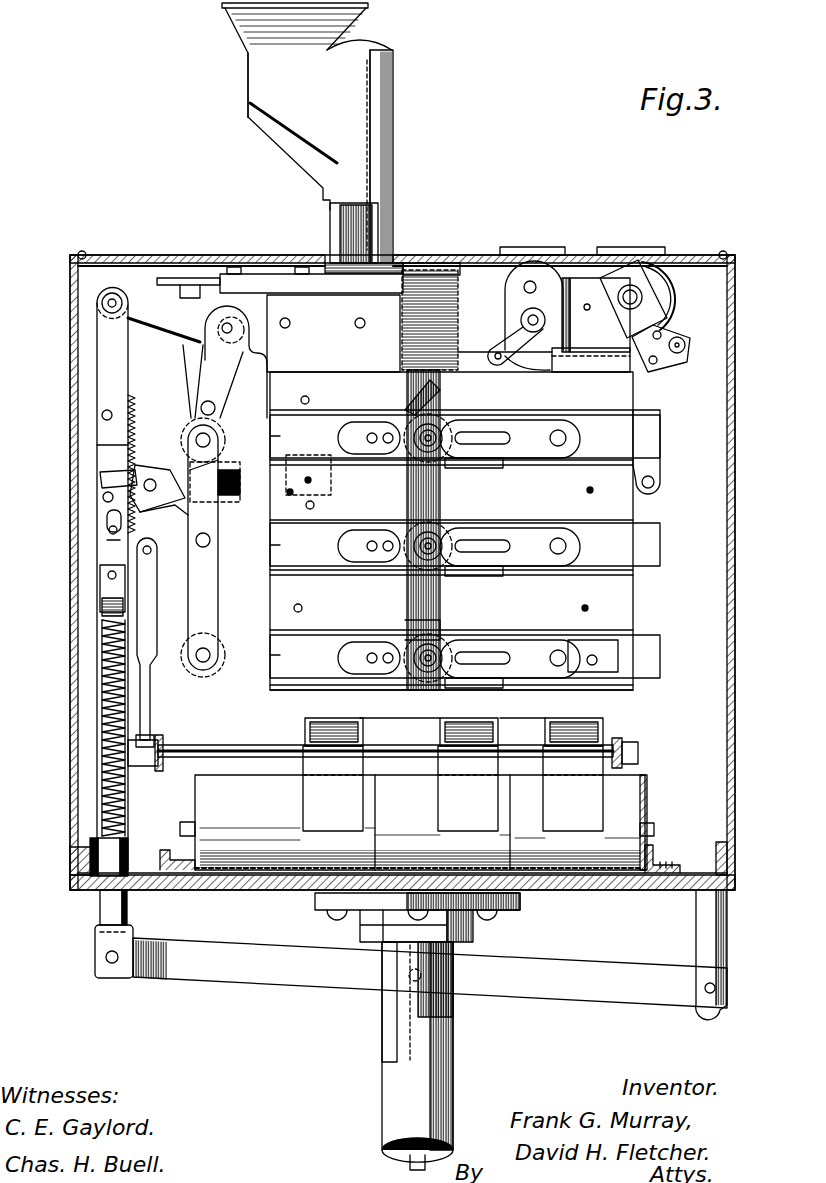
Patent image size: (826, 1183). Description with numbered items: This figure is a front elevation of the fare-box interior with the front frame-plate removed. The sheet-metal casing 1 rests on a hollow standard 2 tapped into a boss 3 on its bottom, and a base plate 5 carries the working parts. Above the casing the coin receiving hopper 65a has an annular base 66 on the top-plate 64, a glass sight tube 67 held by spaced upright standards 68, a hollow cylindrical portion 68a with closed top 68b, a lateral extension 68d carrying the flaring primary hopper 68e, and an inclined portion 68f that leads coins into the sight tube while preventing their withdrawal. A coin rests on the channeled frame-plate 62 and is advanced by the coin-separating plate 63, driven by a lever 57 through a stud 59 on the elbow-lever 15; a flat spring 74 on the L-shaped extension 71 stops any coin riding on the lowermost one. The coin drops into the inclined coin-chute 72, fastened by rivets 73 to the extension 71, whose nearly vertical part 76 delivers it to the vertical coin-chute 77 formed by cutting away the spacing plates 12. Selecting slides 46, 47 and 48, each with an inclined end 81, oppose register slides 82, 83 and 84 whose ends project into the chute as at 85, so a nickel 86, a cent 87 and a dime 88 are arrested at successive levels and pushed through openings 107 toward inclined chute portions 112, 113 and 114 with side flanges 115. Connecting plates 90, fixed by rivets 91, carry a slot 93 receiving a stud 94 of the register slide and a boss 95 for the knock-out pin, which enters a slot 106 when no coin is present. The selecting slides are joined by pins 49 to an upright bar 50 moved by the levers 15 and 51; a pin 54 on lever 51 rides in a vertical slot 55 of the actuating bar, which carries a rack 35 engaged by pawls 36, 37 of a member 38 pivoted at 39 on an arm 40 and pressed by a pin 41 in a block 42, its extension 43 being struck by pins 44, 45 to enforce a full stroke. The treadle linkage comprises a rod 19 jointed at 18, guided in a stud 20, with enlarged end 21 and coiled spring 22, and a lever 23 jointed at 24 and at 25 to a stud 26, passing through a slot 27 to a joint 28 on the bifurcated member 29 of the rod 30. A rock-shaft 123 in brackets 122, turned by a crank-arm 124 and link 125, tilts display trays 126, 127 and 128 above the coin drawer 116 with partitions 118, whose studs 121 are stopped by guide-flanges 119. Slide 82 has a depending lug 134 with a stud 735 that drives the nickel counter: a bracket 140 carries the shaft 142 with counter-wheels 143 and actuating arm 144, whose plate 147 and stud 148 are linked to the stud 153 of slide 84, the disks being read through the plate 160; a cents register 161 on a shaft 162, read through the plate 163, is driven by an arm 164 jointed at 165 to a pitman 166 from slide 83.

The casing 1 is at (118, 262).
The standard 2 is at (382, 1075).
The boss 3 is at (522, 900).
The base plate 5 is at (213, 890).
The spacing plates 12 is at (451, 538).
The elbow-lever 15 is at (190, 350).
The joint 18 is at (100, 578).
The rod 19 is at (102, 690).
The stud 20 is at (105, 842).
The enlarged lower portion of rod 21 is at (100, 910).
The coiled spring 22 is at (102, 745).
The lever 23 is at (255, 975).
The joint 24 is at (105, 957).
The joint 25 is at (716, 988).
The stud 26 is at (727, 928).
The slot 27 is at (382, 975).
The joint 28 is at (448, 979).
The bifurcated member 29 is at (440, 1015).
The rod 30 is at (410, 1165).
The rack 35 is at (117, 454).
The detention pawl 36 is at (97, 445).
The detention pawl 37 is at (107, 520).
The pawl member 38 is at (164, 515).
The pivot 39 is at (165, 470).
The horizontal arm 40 is at (176, 468).
The horizontal pin 41 is at (225, 452).
The block 42 is at (230, 472).
The forward extension 43 is at (100, 476).
The pin 44 is at (102, 415).
The pin 45 is at (103, 496).
The slide-bar 46 is at (286, 435).
The slide-bar 47 is at (302, 555).
The slide-bar 48 is at (280, 657).
The pins 49 is at (212, 430).
The connecting bar 50 is at (190, 610).
The elbow lever 51 is at (190, 560).
The pin 54 is at (112, 540).
The vertical slot 55 is at (110, 530).
The lever 57 is at (178, 275).
The stud 59 is at (201, 408).
The horizontal frame-plate 62 is at (285, 276).
The coin-separating plate 63 is at (205, 278).
The top-plate 64 is at (250, 274).
The coin receiving hopper 65a is at (395, 100).
The annular base portion 66 is at (405, 263).
The glass sight tube 67 is at (372, 235).
The upright standards 68 is at (333, 210).
The hollow cylindrical portion 68a is at (395, 70).
The closed top 68b is at (357, 42).
The lateral extension 68d is at (248, 90).
The primary hopper 68e is at (245, 33).
The inclined portion 68f is at (270, 145).
The L-shaped extension 71 is at (485, 241).
The inclined coin-chute 72 is at (460, 310).
The screws or rivets 73 is at (362, 345).
The flat spring 74 is at (233, 327).
The nearly vertical portion 76 is at (102, 302).
The vertical coin-chute 77 is at (99, 352).
The inclined end portion 81 is at (405, 472).
The slide 82 is at (465, 436).
The slide 83 is at (465, 544).
The slide 84 is at (465, 656).
The projection 85 is at (440, 412).
The nickel 86 is at (410, 405).
The cent 87 is at (423, 530).
The dime 88 is at (405, 630).
The connecting plate 90 is at (368, 446).
The rivets 91 is at (367, 436).
The slot 93 is at (520, 422).
The stud 94 is at (566, 438).
The boss 95 is at (428, 452).
The slot 106 is at (480, 432).
The openings 107 is at (503, 463).
The inclined portion 112 is at (332, 720).
The inclined portion 113 is at (575, 720).
The inclined portion 114 is at (472, 720).
The side flanges 115 is at (400, 718).
The coin receptacle 116 is at (648, 790).
The partitions 118 is at (440, 860).
The guide-flanges 119 is at (172, 857).
The studs 121 is at (182, 825).
The brackets 122 is at (160, 745).
The rock-shaft 123 is at (250, 745).
The crank-arm 124 is at (148, 735).
The link 125 is at (102, 605).
The tray 126 is at (333, 815).
The tray 127 is at (580, 815).
The tray 128 is at (472, 815).
The depending lug 134 is at (660, 458).
The pin 735 is at (655, 482).
The bracket 140 is at (600, 360).
The shaft 142 is at (655, 290).
The counter-wheels 143 is at (643, 297).
The actuating arm 144 is at (628, 330).
The plate 147 is at (595, 275).
The stud 148 is at (680, 338).
The stud 153 is at (592, 655).
The plate 160 is at (622, 264).
The cents registering mechanism 161 is at (558, 265).
The shaft 162 is at (534, 305).
The plate 163 is at (515, 265).
The actuating arm 164 is at (512, 340).
The joint 165 is at (458, 352).
The pitman 166 is at (535, 370).